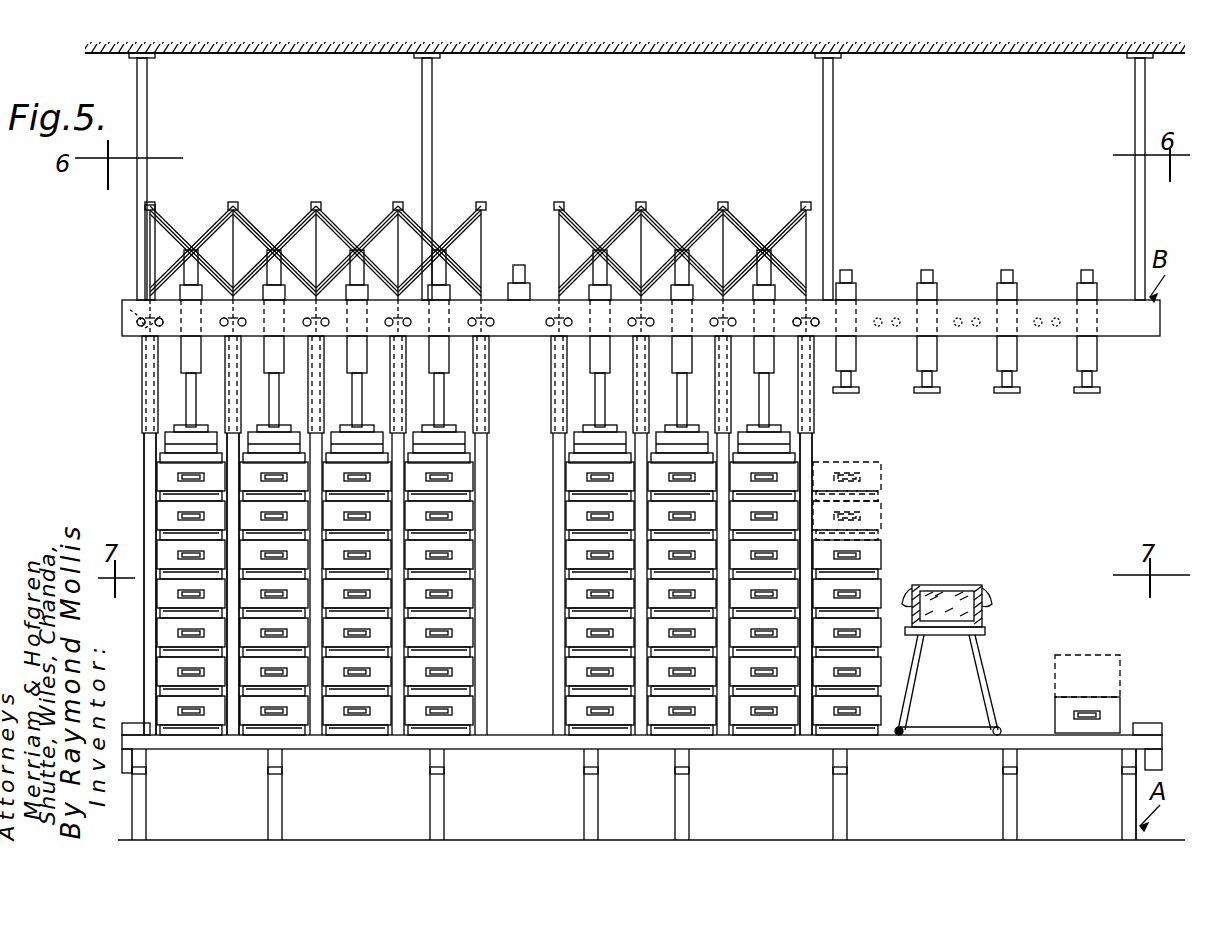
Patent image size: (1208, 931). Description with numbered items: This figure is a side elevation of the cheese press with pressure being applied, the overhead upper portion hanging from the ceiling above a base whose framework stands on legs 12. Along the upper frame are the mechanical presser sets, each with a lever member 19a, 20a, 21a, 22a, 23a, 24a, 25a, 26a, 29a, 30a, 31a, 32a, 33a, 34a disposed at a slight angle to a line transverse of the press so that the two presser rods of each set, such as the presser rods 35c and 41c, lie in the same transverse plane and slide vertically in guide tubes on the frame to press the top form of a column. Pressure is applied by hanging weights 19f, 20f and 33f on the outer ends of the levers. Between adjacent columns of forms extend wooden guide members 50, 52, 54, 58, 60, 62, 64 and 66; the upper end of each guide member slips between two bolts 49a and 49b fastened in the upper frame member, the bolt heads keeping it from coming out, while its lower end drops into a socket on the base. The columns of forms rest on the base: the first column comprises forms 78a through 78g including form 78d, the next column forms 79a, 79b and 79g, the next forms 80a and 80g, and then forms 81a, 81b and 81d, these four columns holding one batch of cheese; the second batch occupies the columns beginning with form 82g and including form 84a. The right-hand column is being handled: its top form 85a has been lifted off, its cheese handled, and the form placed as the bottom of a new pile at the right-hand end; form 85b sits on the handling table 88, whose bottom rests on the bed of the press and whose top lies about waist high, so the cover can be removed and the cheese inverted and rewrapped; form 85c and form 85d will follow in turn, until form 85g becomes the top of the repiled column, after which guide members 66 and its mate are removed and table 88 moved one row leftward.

The legs 12 is at (150, 822).
The lever member 19a is at (173, 214).
The lever member 20a is at (228, 208).
The lever member 21a is at (263, 220).
The lever member 22a is at (306, 208).
The lever member 23a is at (344, 218).
The lever member 24a is at (380, 206).
The lever member 25a is at (435, 227).
The lever member 26a is at (452, 216).
The lever member 29a is at (567, 206).
The lever member 30a is at (604, 224).
The lever member 31a is at (656, 206).
The lever member 32a is at (689, 224).
The lever member 33a is at (740, 202).
The lever member 34a is at (774, 224).
The presser rod 35c is at (852, 270).
The presser rod 41c is at (1092, 380).
The weight 19f is at (142, 367).
The weight 20f is at (225, 400).
The weight 33f is at (816, 418).
The bolt 49a is at (135, 323).
The bolt 49b is at (125, 303).
The guide member 50 is at (150, 630).
The guide member 52 is at (238, 727).
The guide member 54 is at (320, 733).
The guide member 58 is at (487, 697).
The guide member 60 is at (553, 613).
The guide member 62 is at (640, 733).
The guide member 64 is at (722, 735).
The guide member 66 is at (802, 727).
The cheese form 78a is at (163, 482).
The cheese form 78d is at (163, 592).
The cheese form 78g is at (193, 723).
The cheese form 79a is at (255, 469).
The cheese form 79b is at (267, 516).
The cheese form 79g is at (296, 720).
The cheese form 80a is at (392, 465).
The cheese form 80g is at (371, 723).
The cheese form 81a is at (474, 480).
The cheese form 81b is at (470, 515).
The cheese form 81d is at (470, 590).
The cheese form 82g is at (562, 735).
The cheese form 84a is at (793, 470).
The cheese form 85a is at (882, 465).
The cheese form 85b is at (882, 500).
The cheese form 85c is at (880, 548).
The cheese form 85d is at (880, 588).
The cheese form 85g is at (842, 725).
The handling table 88 is at (975, 660).